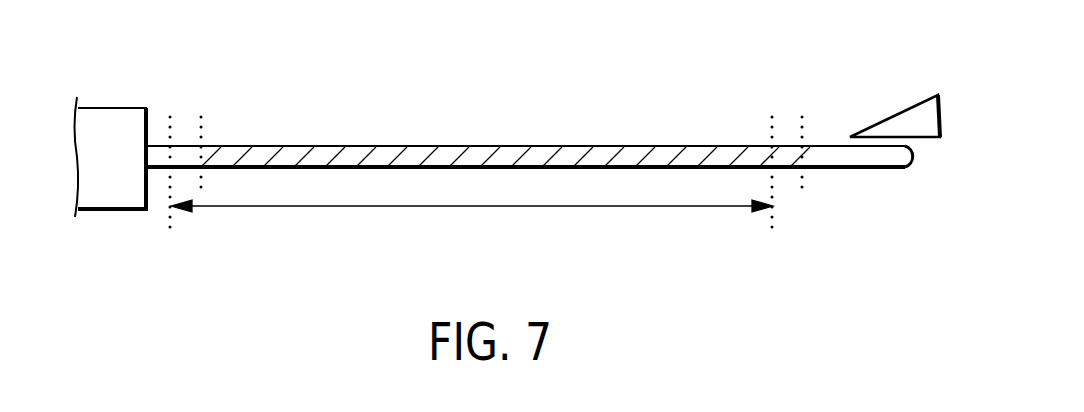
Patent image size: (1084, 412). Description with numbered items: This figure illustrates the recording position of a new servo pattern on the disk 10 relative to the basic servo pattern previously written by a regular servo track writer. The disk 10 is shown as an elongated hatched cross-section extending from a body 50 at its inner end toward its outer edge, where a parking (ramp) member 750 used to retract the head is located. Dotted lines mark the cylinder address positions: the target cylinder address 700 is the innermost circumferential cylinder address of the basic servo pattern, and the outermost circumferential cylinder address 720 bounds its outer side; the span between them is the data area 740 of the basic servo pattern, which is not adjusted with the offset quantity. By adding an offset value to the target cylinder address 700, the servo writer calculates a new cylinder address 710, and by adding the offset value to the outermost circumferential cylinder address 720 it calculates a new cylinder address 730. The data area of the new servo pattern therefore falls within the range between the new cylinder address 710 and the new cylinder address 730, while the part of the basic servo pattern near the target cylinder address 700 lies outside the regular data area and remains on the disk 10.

The disk 10 is at (867, 170).
The support body 50 is at (113, 107).
The target cylinder address 700 is at (172, 215).
The new cylinder address 710 is at (201, 125).
The outermost circumferential cylinder address 720 is at (773, 215).
The new cylinder address 730 is at (803, 125).
The data area 740 is at (452, 207).
The parking (ramp) member 750 is at (900, 111).